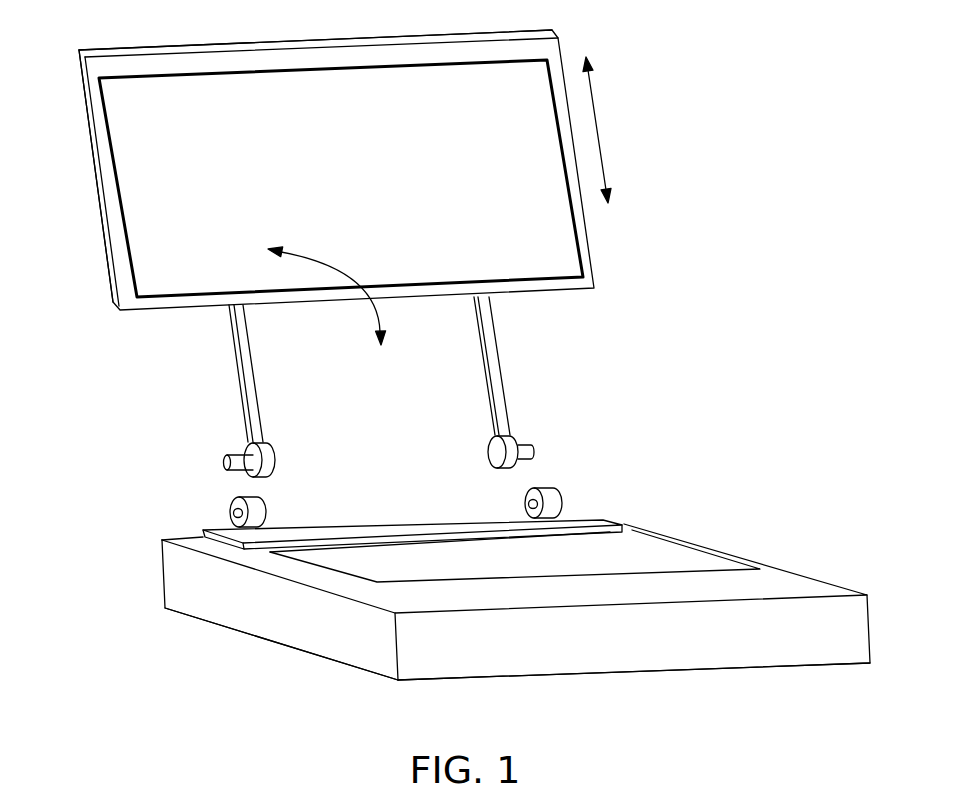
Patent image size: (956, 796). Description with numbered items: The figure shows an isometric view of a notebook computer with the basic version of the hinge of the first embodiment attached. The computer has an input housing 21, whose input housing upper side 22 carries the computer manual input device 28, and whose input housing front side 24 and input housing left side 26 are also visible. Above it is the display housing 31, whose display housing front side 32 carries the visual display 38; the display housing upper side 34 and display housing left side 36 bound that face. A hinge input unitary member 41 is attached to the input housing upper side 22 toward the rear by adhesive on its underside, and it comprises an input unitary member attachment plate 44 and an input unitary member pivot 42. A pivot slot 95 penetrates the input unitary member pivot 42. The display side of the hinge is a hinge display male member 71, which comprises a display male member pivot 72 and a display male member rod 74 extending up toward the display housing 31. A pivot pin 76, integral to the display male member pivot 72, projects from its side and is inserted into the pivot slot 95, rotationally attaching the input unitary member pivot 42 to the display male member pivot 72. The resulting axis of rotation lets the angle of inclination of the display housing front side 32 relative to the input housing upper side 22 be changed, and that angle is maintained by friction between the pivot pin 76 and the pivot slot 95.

The input housing 21 is at (212, 648).
The input housing upper side 22 is at (777, 590).
The input housing front side 24 is at (747, 645).
The input housing left side 26 is at (360, 643).
The input device 28 is at (652, 555).
The display housing 31 is at (92, 296).
The display housing front side 32 is at (587, 258).
The display housing upper side 34 is at (277, 45).
The display housing left side 36 is at (97, 135).
The visual display 38 is at (545, 228).
The hinge input unitary member 41 is at (624, 506).
The input unitary member pivot 42 is at (546, 488).
The input unitary member attachment plate 44 is at (377, 530).
The hinge display male member 71 is at (533, 397).
The display male member pivot 72 is at (270, 463).
The display male member rod 74 is at (487, 335).
The pivot pin 76 is at (243, 453).
The pivot slot 95 is at (228, 514).